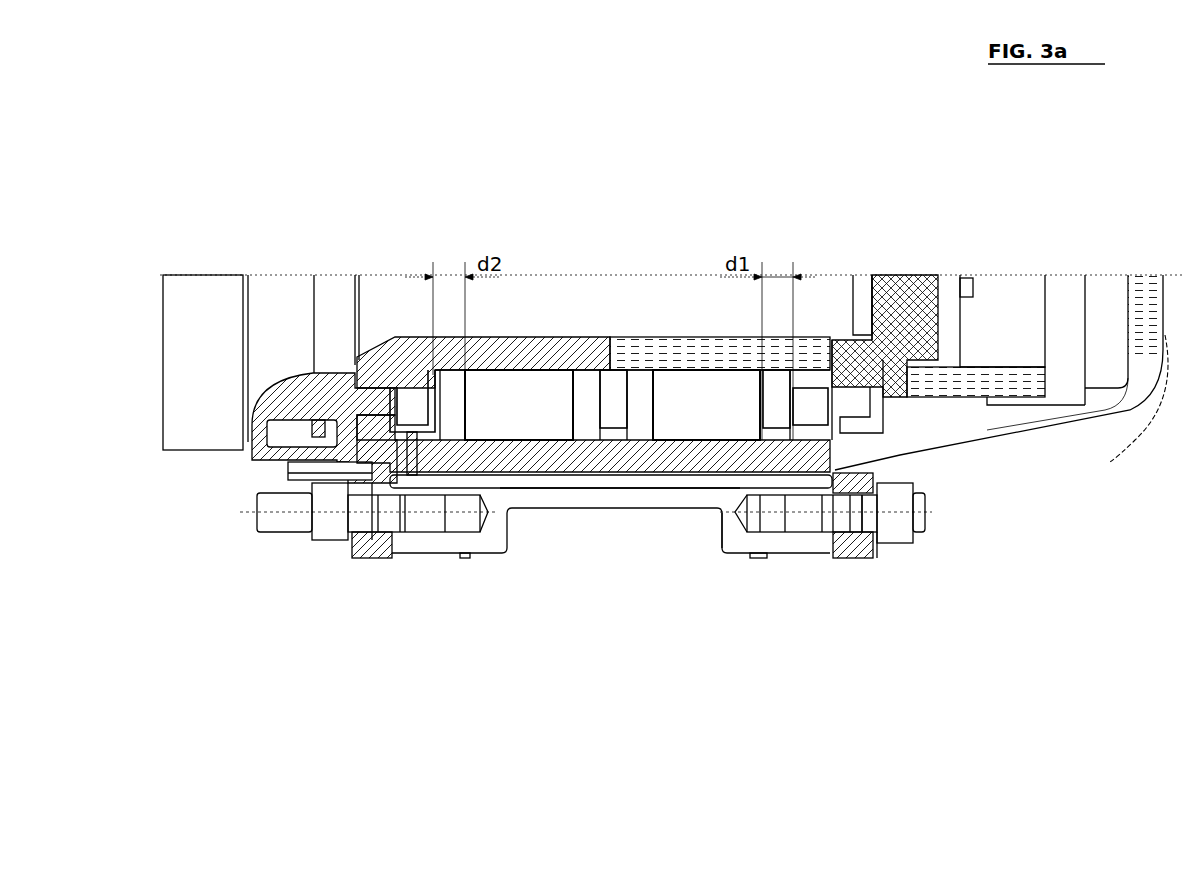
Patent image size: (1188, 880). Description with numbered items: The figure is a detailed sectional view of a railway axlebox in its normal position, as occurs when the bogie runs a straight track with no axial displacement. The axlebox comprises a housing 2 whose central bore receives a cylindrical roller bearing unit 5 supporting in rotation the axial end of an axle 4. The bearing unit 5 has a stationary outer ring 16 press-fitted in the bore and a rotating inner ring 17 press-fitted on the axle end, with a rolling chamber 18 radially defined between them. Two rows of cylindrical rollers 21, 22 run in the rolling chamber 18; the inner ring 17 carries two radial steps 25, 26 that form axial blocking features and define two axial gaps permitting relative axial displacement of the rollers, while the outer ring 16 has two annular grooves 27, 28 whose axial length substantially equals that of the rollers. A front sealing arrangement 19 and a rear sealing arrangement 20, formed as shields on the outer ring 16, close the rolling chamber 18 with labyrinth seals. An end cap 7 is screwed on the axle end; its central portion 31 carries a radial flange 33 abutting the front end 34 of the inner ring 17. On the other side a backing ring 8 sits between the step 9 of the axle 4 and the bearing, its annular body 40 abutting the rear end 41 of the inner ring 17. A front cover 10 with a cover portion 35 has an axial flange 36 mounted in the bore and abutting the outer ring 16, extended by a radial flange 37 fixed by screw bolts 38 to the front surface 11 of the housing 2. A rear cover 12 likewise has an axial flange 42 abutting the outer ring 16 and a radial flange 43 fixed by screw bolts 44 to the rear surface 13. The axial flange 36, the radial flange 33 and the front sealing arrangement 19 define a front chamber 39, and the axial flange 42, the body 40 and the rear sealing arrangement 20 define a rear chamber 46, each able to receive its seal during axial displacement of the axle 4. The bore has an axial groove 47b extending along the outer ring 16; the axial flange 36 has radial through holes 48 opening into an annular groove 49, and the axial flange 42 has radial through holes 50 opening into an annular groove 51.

The housing 2 is at (572, 514).
The axle 4 is at (193, 277).
The cylindrical roller bearing unit 5 is at (658, 330).
The end cap 7 is at (862, 278).
The backing ring 8 is at (277, 410).
The step 9 is at (262, 300).
The front cover 10 is at (1140, 285).
The front surface 11 is at (857, 540).
The rear cover 12 is at (340, 540).
The rear surface 13 is at (373, 560).
The outer ring 16 is at (660, 490).
The inner ring 17 is at (520, 345).
The rolling chamber 18 is at (598, 340).
The front sealing arrangement 19 is at (880, 447).
The rear sealing arrangement 20 is at (307, 533).
The cylindrical rollers 21 is at (708, 405).
The cylindrical rollers 22 is at (520, 405).
The radial step 25 is at (815, 335).
The radial step 26 is at (400, 337).
The annular groove 27 is at (722, 490).
The annular groove 28 is at (522, 480).
The central portion 31 is at (905, 277).
The radial flange 33 is at (978, 285).
The front end 34 is at (848, 288).
The cover portion 35 is at (1131, 407).
The axial flange 36 is at (927, 512).
The radial flange 37 is at (862, 550).
The screw bolts 38 is at (895, 545).
The front chamber 39 is at (936, 283).
The annular body 40 is at (318, 360).
The rear end 41 is at (358, 365).
The axial flange 42 is at (395, 540).
The radial flange 43 is at (376, 558).
The screw bolts 44 is at (343, 542).
The rear chamber 46 is at (288, 475).
The axial groove 47b is at (620, 490).
The radial through holes 48 is at (822, 478).
The annular groove 49 is at (768, 480).
The radial through holes 50 is at (380, 540).
The annular groove 51 is at (465, 540).